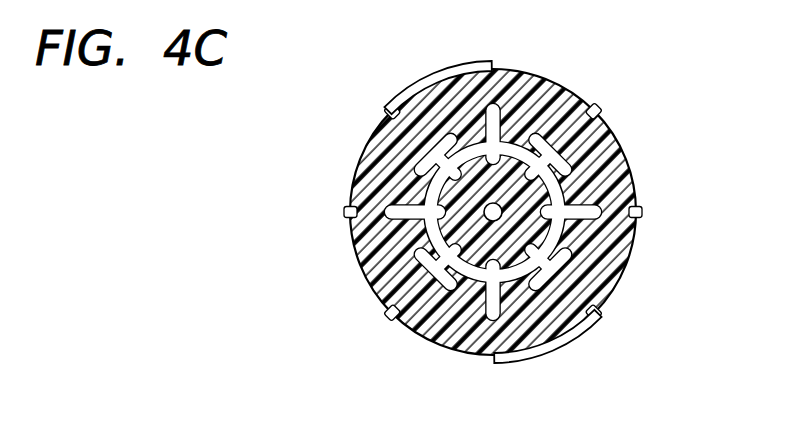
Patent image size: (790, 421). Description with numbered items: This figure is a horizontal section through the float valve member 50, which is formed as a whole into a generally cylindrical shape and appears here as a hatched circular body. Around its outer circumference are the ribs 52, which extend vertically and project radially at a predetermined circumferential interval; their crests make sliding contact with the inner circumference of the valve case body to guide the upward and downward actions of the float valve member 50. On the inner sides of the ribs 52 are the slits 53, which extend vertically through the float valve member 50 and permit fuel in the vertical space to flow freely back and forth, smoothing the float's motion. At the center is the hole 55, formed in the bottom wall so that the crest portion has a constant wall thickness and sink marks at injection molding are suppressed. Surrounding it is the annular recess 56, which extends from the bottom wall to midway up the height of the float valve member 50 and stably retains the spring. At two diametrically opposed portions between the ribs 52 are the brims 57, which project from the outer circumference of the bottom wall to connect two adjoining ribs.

The float valve member 50 is at (587, 80).
The ribs 52 is at (386, 107).
The slits 53 is at (557, 152).
The hole 55 is at (491, 211).
The annular recess 56 is at (457, 268).
The brims 57 is at (413, 81).